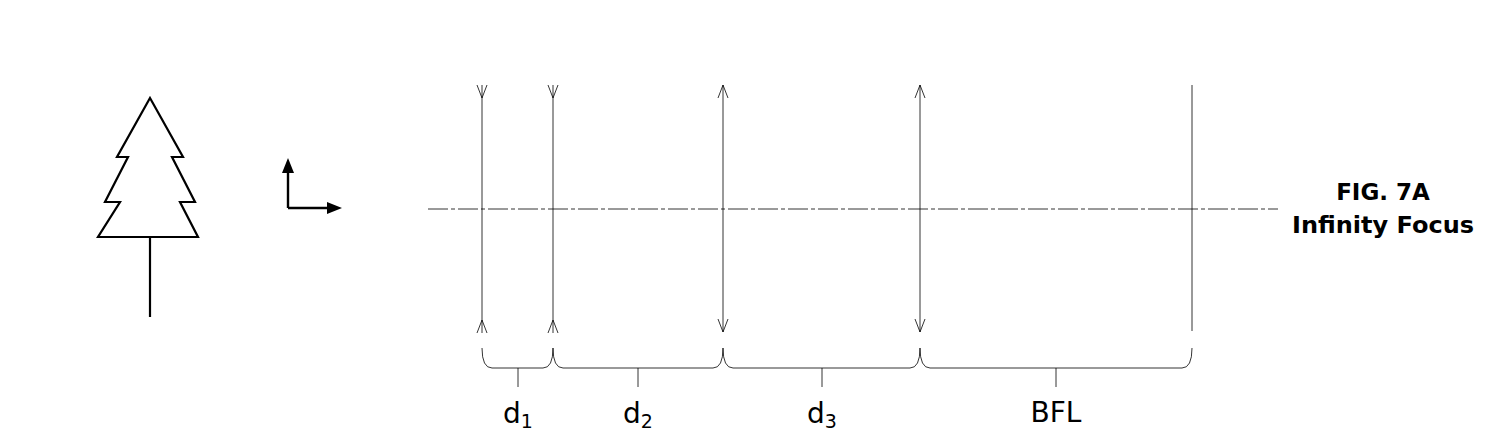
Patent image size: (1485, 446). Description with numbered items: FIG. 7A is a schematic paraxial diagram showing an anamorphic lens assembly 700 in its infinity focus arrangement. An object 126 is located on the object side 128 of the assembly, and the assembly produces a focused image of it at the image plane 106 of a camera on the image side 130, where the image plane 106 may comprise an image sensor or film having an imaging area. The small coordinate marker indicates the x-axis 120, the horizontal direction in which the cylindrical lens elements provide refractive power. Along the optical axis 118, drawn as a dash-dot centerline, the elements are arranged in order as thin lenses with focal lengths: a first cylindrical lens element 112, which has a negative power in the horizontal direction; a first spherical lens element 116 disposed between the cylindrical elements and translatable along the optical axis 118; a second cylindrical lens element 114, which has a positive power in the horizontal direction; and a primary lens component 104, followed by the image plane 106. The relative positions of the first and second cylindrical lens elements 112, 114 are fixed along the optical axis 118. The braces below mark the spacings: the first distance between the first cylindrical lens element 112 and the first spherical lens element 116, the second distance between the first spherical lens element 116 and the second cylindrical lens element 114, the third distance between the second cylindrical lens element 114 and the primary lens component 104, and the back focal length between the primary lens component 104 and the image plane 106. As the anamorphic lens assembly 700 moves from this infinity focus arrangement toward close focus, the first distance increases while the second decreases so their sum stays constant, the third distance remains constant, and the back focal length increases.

The anamorphic lens assembly 700 is at (1113, 92).
The object 126 is at (150, 94).
The x-axis 120 is at (287, 193).
The object side 128 is at (395, 137).
The image side 130 is at (1127, 137).
The first cylindrical lens element 112 is at (482, 240).
The first spherical lens element 116 is at (553, 257).
The second cylindrical lens element 114 is at (723, 253).
The primary lens component 104 is at (920, 248).
The image plane 106 is at (1192, 257).
The optical axis 118 is at (1137, 209).